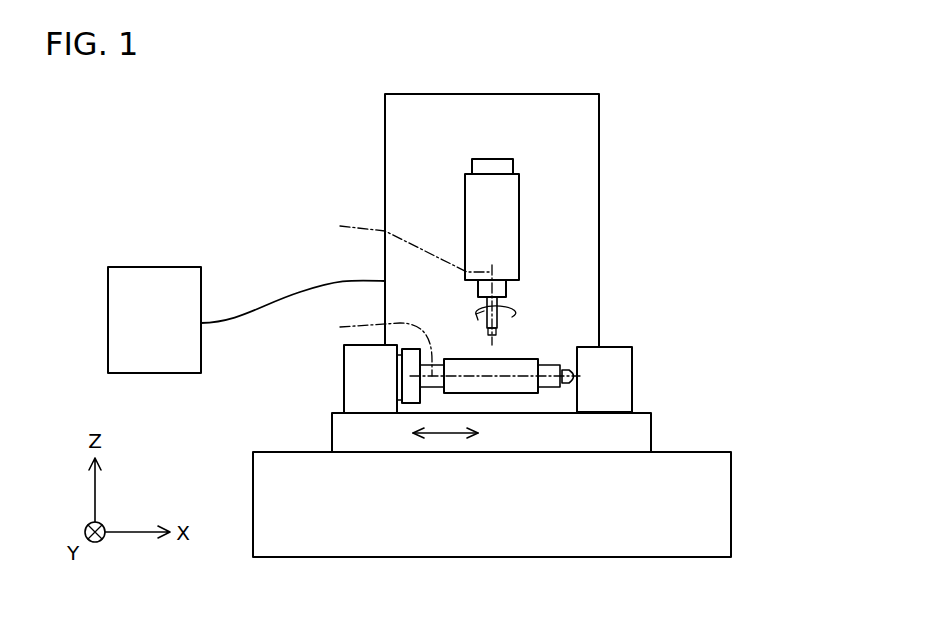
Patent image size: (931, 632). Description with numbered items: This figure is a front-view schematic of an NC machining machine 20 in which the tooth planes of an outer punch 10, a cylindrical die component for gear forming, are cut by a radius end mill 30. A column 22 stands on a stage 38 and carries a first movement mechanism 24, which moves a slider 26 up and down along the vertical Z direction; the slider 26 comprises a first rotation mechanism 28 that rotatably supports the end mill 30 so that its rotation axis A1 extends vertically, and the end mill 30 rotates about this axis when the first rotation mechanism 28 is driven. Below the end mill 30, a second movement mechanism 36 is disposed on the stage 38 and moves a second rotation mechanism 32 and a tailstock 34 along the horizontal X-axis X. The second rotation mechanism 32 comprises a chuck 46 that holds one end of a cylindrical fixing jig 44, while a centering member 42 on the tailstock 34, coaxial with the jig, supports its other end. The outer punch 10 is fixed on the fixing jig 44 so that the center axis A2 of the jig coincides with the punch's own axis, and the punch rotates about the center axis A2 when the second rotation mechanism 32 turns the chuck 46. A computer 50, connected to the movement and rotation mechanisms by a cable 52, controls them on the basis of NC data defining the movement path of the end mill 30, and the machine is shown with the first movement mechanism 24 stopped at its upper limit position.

The outer punch 10 is at (497, 393).
The NC machining machine 20 is at (661, 87).
The column 22 is at (585, 115).
The first movement mechanism 24 is at (503, 168).
The slider 26 is at (508, 231).
The first rotation mechanism 28 is at (503, 283).
The end mill 30 is at (495, 306).
The second rotation mechanism 32 is at (365, 377).
The tailstock 34 is at (620, 375).
The second movement mechanism 36 is at (620, 428).
The stage 38 is at (718, 498).
The centering member 42 is at (570, 390).
The fixing jig 44 is at (550, 393).
The chuck 46 is at (410, 398).
The computer 50 is at (128, 340).
The cable 52 is at (265, 300).
The rotation axis A1 is at (401, 277).
The center axis A2 is at (445, 345).
The X-axis X is at (447, 437).